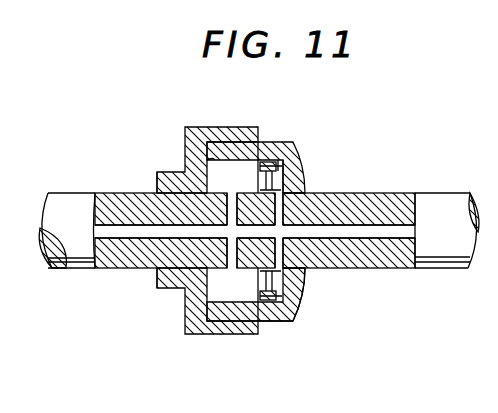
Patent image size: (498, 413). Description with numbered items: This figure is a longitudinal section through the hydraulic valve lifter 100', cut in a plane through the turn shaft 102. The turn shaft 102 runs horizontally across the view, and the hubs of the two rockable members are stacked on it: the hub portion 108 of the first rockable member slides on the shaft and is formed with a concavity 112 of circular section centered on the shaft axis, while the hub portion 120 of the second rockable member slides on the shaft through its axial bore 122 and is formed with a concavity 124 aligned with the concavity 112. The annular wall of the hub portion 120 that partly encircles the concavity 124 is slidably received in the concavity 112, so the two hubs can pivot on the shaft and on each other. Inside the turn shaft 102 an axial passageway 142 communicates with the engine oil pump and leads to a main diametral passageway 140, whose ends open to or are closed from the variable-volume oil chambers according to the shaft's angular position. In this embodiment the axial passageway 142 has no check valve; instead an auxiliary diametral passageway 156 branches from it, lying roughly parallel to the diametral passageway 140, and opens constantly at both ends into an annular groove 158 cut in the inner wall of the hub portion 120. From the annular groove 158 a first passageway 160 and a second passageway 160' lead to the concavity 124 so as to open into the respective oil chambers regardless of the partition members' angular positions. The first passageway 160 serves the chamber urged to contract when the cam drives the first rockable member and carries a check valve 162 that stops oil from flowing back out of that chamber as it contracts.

The hydraulic valve lifter 100' is at (126, 196).
The turn shaft 102 is at (72, 203).
The hub portion 108 is at (237, 322).
The concavity 112 is at (230, 323).
The hub portion 120 is at (278, 312).
The axial bore 122 is at (310, 263).
The concavity 124 is at (187, 146).
The diametral passageway 140 is at (232, 280).
The axial passageway 142 is at (365, 223).
The auxiliary diametral passageway 156 is at (300, 203).
The annular groove 158 is at (297, 172).
The first passageway 160 is at (282, 153).
The second passageway 160' is at (332, 300).
The check valve 162 is at (272, 160).